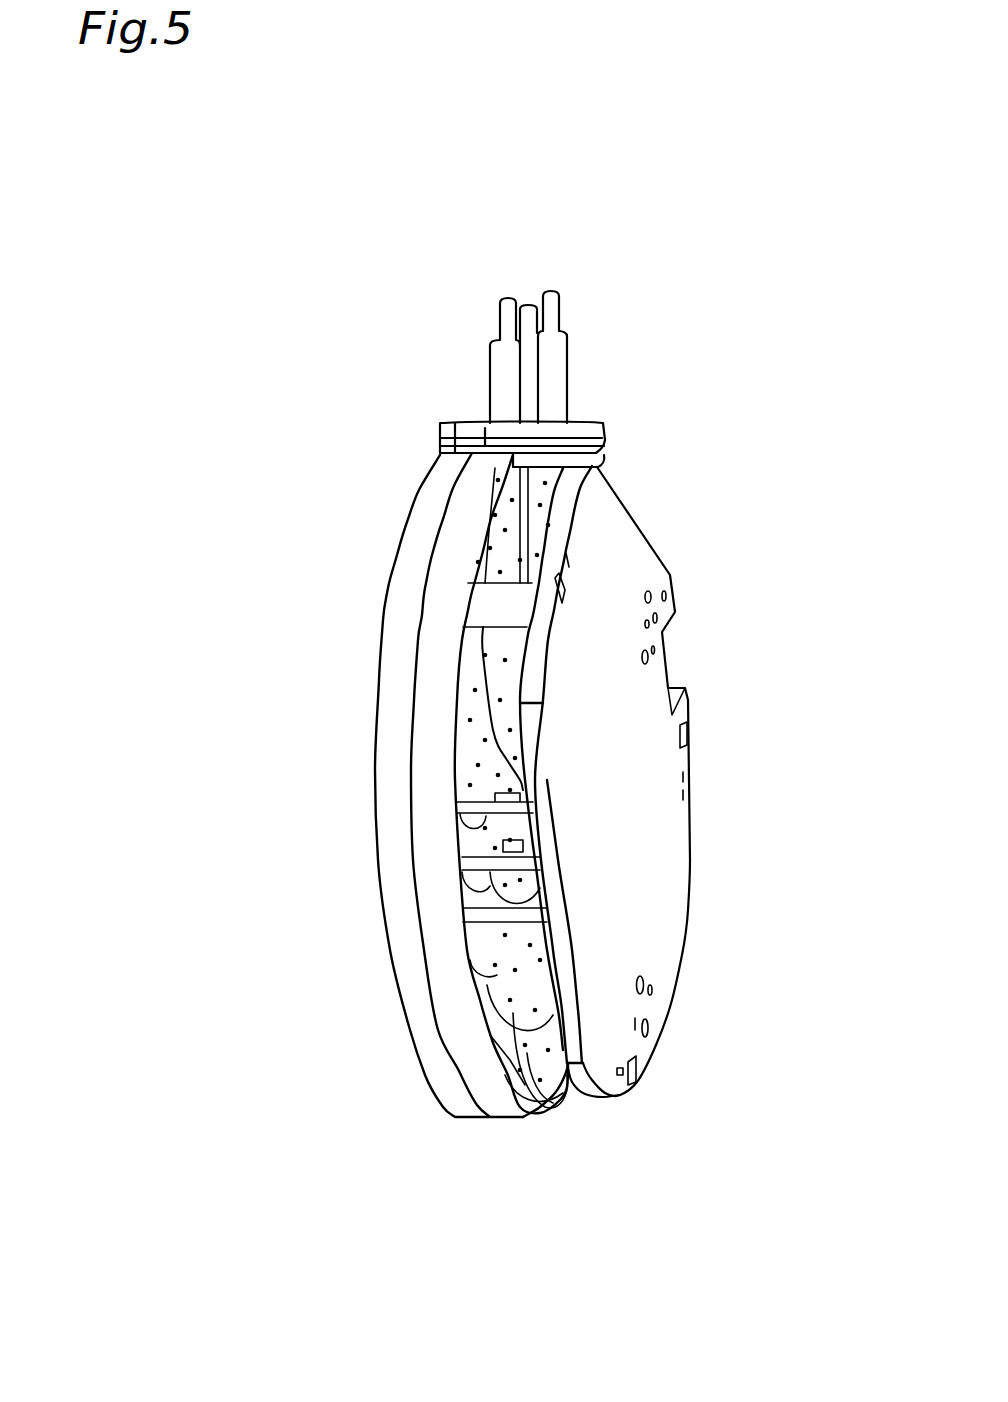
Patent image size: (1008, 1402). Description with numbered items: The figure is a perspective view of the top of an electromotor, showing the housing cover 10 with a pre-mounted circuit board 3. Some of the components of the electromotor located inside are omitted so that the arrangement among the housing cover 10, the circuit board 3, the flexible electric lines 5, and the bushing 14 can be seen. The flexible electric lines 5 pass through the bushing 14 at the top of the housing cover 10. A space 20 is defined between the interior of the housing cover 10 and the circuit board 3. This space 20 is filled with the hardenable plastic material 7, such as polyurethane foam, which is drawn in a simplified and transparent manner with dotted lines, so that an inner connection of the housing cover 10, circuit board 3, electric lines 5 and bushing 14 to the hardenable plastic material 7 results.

The circuit board 3 is at (667, 858).
The flexible electric lines 5 is at (528, 335).
The hardenable plastic material 7 is at (477, 760).
The housing cover 10 is at (380, 882).
The bushing 14 is at (587, 427).
The space 20 is at (535, 1053).